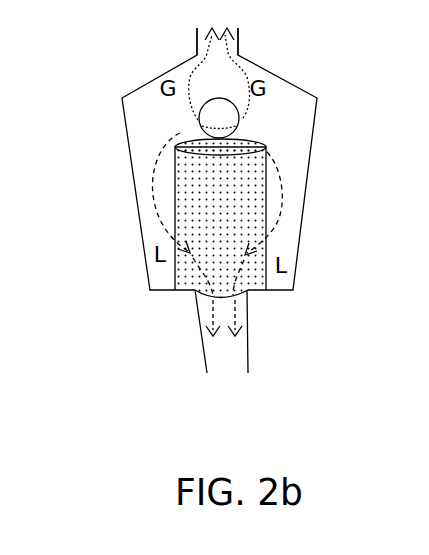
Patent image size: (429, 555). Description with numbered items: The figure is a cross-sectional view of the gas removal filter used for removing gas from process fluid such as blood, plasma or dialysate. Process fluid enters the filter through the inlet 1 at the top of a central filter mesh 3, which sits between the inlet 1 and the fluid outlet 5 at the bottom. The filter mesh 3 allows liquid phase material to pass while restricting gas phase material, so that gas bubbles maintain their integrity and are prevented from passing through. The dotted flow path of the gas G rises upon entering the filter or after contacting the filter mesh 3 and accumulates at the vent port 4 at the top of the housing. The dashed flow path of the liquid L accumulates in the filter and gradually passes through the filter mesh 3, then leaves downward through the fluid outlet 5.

The vent port 4 is at (238, 32).
The filter mesh 3 is at (198, 140).
The inlet 1 is at (243, 120).
The fluid outlet 5 is at (227, 373).